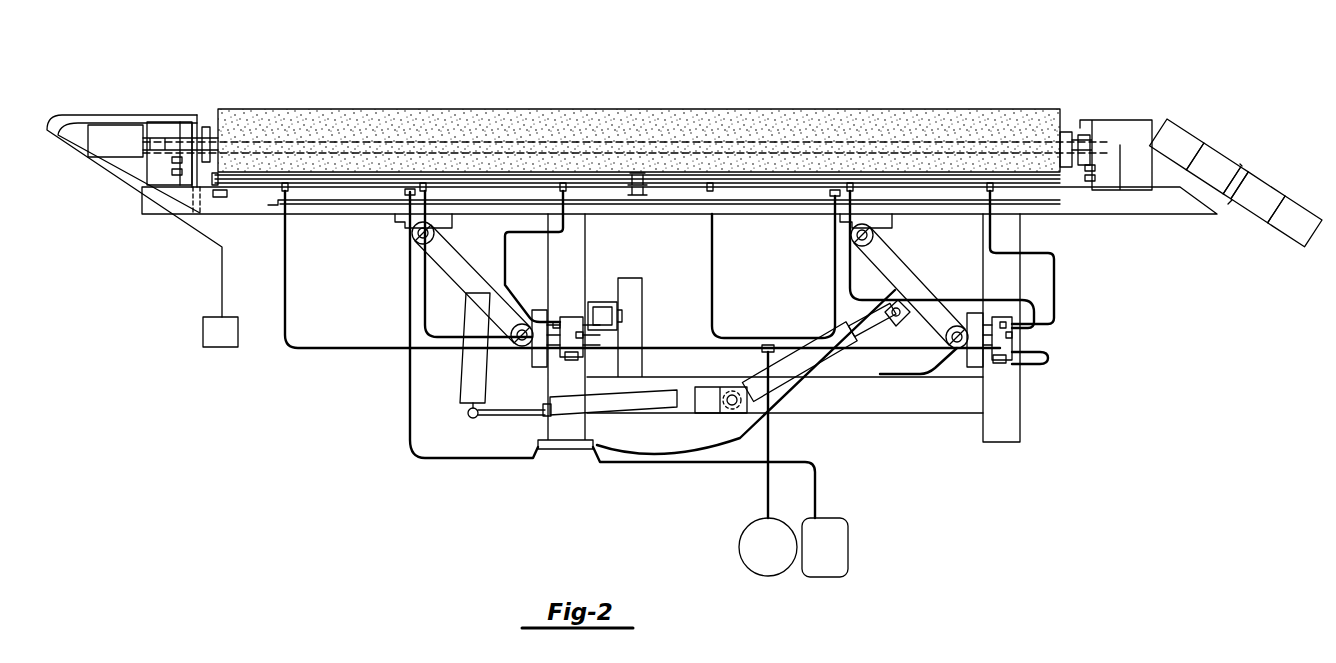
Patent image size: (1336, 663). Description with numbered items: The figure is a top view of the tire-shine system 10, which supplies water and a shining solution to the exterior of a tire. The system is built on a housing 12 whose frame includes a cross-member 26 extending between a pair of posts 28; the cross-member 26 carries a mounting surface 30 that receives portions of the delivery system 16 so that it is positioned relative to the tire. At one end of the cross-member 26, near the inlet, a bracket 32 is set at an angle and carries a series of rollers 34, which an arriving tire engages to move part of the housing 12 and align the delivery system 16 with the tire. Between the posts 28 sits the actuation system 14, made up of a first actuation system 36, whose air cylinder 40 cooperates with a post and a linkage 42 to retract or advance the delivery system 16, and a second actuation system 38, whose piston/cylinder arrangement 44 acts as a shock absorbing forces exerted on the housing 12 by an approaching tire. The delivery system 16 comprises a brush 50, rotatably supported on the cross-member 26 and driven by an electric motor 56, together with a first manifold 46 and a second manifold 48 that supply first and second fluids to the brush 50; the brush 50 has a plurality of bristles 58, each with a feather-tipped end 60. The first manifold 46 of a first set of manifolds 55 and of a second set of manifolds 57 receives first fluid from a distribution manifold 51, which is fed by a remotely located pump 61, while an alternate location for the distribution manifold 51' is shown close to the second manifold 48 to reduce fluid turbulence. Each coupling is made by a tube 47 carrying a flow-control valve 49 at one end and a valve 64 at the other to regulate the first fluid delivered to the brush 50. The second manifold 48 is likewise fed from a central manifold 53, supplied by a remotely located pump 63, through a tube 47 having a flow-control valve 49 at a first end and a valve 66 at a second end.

The tire-shine system 10 is at (605, 48).
The housing 12 is at (968, 420).
The actuation system 14 is at (455, 290).
The delivery system 16 is at (1030, 106).
The cross-member 26 is at (1188, 214).
The posts 28 is at (585, 345).
The mounting surface 30 is at (1140, 206).
The bracket 32 is at (1232, 205).
The rollers 34 is at (1187, 138).
The first actuation system 36 is at (515, 412).
The second actuation system 38 is at (815, 372).
The air cylinder 40 is at (650, 405).
The linkage 42 is at (445, 256).
The piston/cylinder arrangement 44 is at (790, 386).
The first manifold 46 is at (322, 178).
The tube 47 is at (498, 256).
The second manifold 48 is at (240, 165).
The flow-control valve 49 is at (580, 332).
The brush 50 is at (462, 108).
The distribution manifold 51 is at (760, 381).
The distribution manifold 51' is at (597, 236).
The central manifold 53 is at (556, 450).
The first set of manifolds 55 is at (952, 170).
The electric motor 56 is at (165, 125).
The second set of manifolds 57 is at (368, 170).
The bristles 58 is at (655, 108).
The feather-tipped end 60 is at (887, 108).
The pump 61 is at (750, 565).
The pump 63 is at (842, 557).
The valve 64 is at (289, 182).
The valve 66 is at (403, 195).